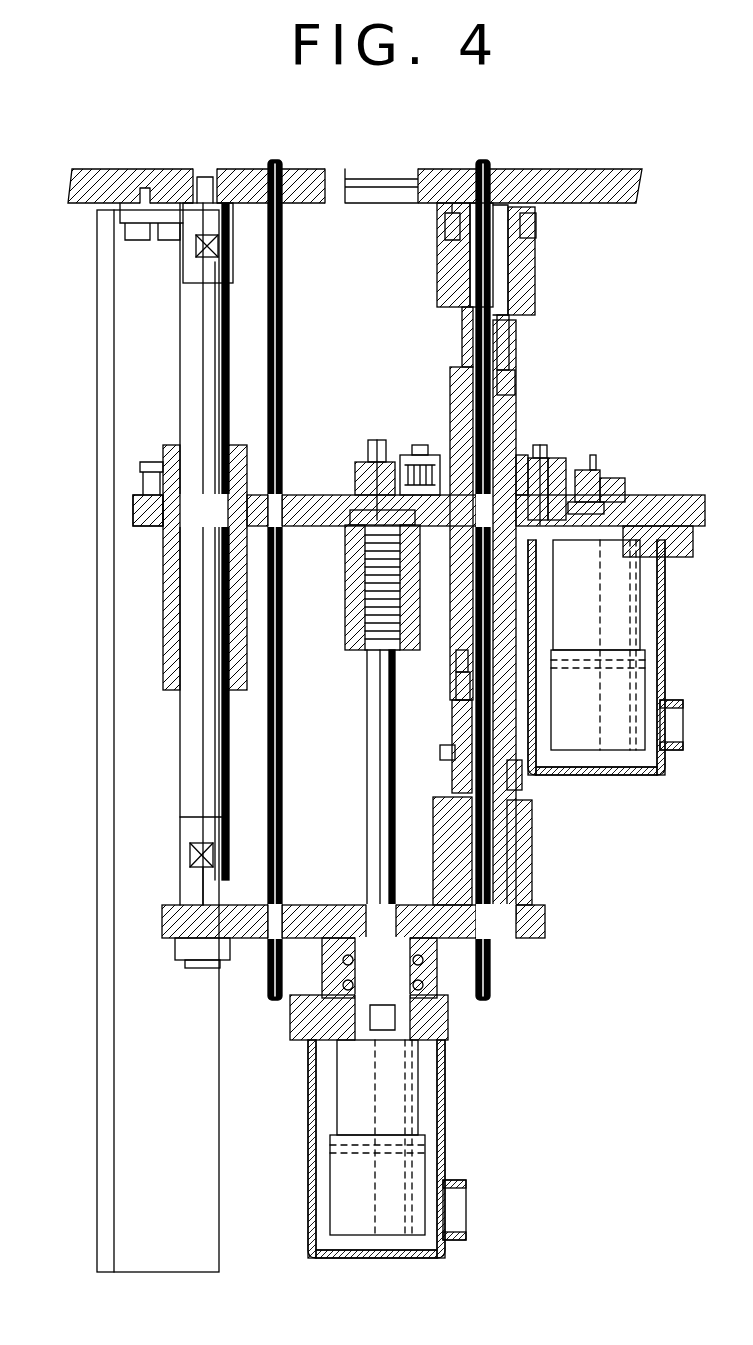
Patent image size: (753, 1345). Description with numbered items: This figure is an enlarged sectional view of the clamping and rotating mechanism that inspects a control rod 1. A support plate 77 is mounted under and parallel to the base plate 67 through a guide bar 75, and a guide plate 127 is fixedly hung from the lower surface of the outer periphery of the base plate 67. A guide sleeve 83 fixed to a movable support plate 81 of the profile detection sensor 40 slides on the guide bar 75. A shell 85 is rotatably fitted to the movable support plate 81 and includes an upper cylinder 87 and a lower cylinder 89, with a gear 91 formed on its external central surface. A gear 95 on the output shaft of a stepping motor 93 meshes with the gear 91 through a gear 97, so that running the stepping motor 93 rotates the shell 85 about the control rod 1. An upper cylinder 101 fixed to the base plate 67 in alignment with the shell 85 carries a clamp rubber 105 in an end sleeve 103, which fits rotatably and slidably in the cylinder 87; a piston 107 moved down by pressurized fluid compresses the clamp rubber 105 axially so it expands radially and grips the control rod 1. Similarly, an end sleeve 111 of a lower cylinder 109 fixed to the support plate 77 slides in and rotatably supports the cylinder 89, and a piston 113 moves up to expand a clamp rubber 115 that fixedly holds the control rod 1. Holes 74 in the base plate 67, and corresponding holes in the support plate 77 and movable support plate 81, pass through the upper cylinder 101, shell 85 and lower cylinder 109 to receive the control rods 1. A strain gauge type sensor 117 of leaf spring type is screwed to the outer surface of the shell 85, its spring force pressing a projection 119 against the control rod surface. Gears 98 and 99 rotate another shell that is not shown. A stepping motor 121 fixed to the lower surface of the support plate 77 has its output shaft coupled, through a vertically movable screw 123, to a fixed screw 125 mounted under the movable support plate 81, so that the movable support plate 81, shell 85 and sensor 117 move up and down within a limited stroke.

The control rod 1 is at (538, 228).
The profile detection sensor 40 is at (520, 462).
The base plate 67 is at (608, 190).
The holes 74 is at (285, 172).
The guide bar 75 is at (190, 786).
The support plate 77 is at (240, 945).
The movable support plate 81 is at (694, 503).
The guide sleeve 83 is at (163, 600).
The shell 85 is at (500, 612).
The cylinder 87 is at (452, 385).
The cylinder 89 is at (448, 748).
The gear 91 is at (550, 462).
The stepping motor 93 is at (620, 697).
The gear 95 is at (628, 486).
The gear 97 is at (582, 470).
The gear 98 is at (425, 455).
The gear 99 is at (365, 460).
The upper cylinder 101 is at (437, 270).
The end sleeve 103 is at (510, 336).
The clamp rubber 105 is at (512, 374).
The piston 107 is at (535, 280).
The lower cylinder 109 is at (530, 852).
The end sleeve 111 is at (516, 780).
The piston 113 is at (440, 830).
The clamp rubber 115 is at (455, 735).
The strain gauge type sensor 117 is at (460, 660).
The projection 119 is at (460, 695).
The stepping motor 121 is at (350, 1096).
The vertically movable screw 123 is at (368, 858).
The fixed screw 125 is at (348, 634).
The guide plate 127 is at (98, 742).